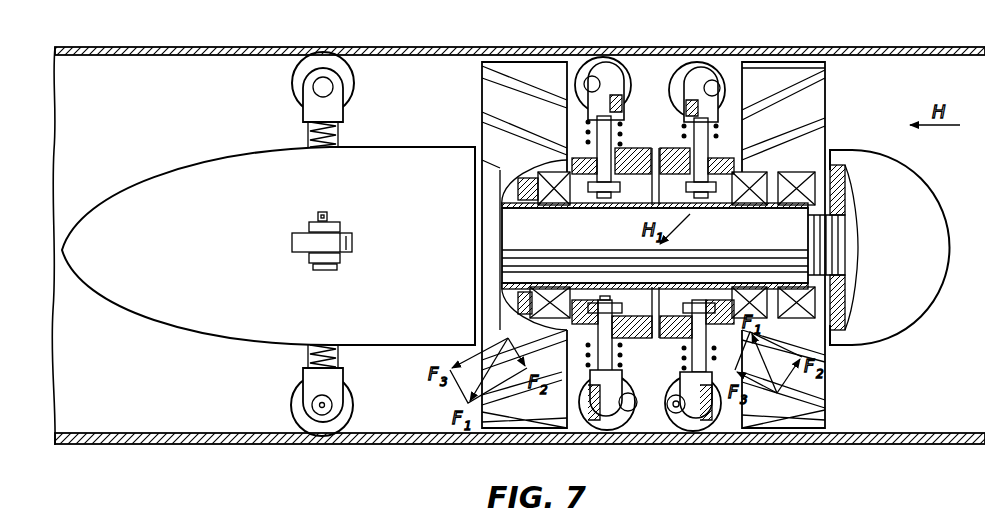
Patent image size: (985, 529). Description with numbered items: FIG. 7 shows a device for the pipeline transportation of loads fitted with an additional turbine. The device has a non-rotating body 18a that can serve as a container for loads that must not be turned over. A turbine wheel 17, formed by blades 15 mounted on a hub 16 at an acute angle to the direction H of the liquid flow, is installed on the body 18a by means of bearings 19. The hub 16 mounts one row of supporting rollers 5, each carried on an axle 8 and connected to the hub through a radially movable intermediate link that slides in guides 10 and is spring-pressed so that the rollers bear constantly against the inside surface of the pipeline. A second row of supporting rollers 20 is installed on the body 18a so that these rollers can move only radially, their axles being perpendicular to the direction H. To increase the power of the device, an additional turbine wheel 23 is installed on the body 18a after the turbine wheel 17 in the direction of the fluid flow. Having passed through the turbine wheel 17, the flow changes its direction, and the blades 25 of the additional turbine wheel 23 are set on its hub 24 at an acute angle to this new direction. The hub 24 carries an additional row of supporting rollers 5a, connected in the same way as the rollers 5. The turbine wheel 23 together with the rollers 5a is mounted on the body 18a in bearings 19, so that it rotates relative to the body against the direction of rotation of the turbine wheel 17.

The supporting roller 5 is at (700, 434).
The supporting rollers of the additional row 5a is at (598, 434).
The axle 8 is at (716, 94).
The guides 10 is at (623, 165).
The blades 15 is at (808, 100).
The hub 16 is at (818, 168).
The turbine wheel 17 is at (786, 66).
The body 18a is at (390, 150).
The bearings 19 is at (556, 185).
The supporting rollers of the second row 20 is at (300, 80).
The additional turbine wheel 23 is at (524, 66).
The hub 24 is at (562, 325).
The blades 25 is at (497, 100).